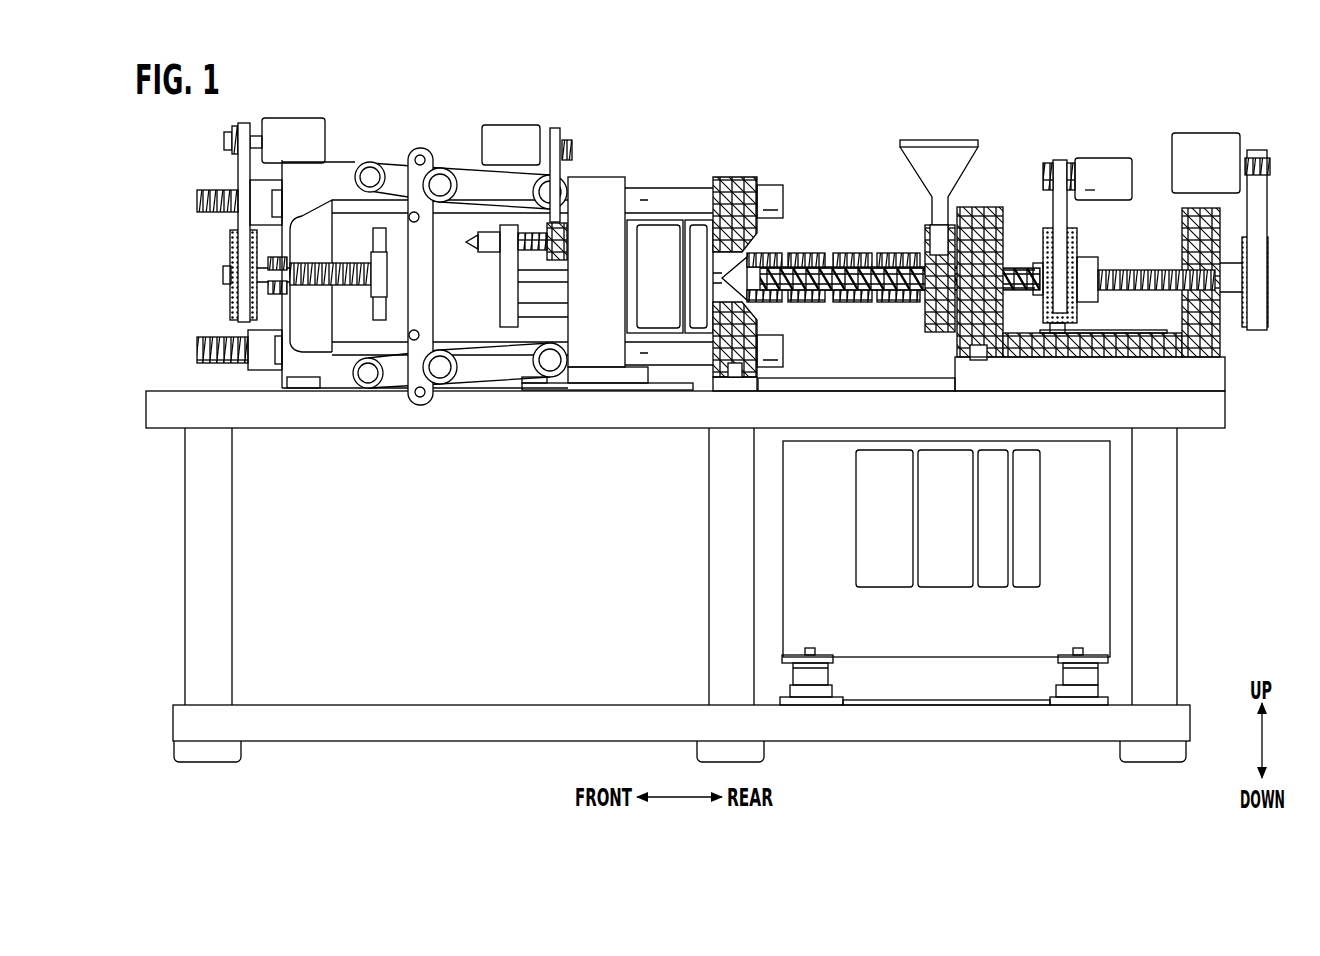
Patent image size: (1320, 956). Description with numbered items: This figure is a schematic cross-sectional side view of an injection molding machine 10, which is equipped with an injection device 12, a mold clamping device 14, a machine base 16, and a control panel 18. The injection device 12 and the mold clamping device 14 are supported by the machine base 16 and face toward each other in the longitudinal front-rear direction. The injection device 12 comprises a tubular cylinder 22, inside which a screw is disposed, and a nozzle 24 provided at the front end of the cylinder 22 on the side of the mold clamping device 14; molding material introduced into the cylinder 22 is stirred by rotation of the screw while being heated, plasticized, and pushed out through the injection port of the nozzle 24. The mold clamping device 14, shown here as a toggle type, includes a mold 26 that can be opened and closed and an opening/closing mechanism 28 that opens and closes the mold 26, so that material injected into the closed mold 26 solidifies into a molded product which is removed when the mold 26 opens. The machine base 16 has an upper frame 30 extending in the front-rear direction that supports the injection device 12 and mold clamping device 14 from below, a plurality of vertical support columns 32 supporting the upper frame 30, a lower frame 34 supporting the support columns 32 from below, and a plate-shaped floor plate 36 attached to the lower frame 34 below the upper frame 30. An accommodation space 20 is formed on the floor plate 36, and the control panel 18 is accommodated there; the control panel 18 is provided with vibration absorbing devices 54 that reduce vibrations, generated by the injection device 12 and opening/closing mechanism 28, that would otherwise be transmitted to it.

The injection molding machine 10 is at (1245, 109).
The injection device 12 is at (985, 122).
The mold clamping device 14 is at (419, 125).
The machine base 16 is at (172, 581).
The control panel 18 is at (1095, 480).
The accommodation space 20 is at (948, 689).
The cylinder 22 is at (816, 258).
The nozzle 24 is at (731, 262).
The mold 26 is at (682, 214).
The opening/closing mechanism 28 is at (207, 139).
The upper frame 30 is at (170, 399).
The support columns 32 is at (204, 522).
The lower frame 34 is at (395, 723).
The floor plate 36 is at (903, 702).
The vibration absorbing devices 54 is at (1050, 677).